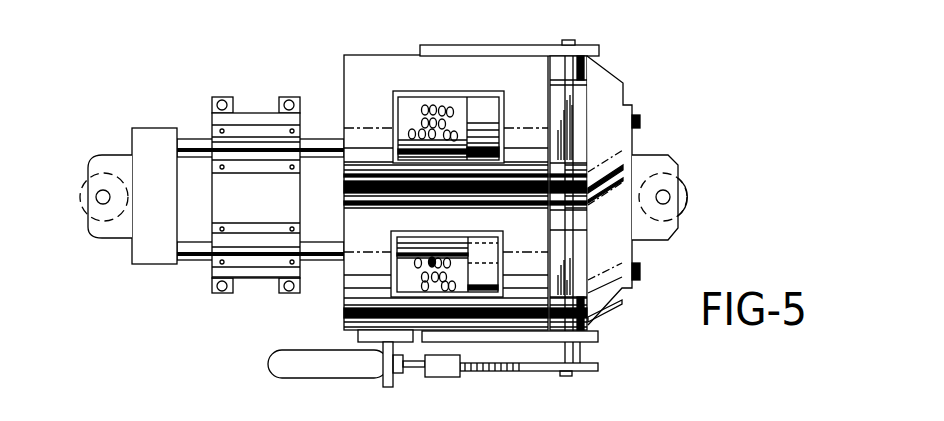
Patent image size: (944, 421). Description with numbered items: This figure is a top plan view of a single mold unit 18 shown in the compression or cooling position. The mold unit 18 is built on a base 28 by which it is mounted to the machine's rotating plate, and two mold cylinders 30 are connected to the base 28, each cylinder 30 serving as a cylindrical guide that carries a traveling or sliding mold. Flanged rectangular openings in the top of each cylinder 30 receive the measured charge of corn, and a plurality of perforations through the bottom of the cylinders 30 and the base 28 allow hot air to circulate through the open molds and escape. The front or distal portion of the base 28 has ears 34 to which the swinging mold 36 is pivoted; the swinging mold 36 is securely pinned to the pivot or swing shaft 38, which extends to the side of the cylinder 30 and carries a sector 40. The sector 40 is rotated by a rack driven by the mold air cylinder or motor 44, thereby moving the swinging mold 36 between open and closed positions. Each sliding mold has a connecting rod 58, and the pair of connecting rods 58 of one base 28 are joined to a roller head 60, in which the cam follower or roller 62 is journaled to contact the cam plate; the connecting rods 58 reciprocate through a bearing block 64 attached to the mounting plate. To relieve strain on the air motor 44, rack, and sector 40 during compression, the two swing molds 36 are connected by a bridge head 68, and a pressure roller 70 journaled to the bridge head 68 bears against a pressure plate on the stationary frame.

The mold unit 18 is at (326, 290).
The base 28 is at (514, 45).
The mold cylinder 30 is at (380, 95).
The ears 34 is at (597, 45).
The swinging mold 36 is at (612, 80).
The pivot shaft or swing shaft 38 is at (579, 18).
The sector 40 is at (598, 367).
The mold air cylinder or motor 44 is at (352, 374).
The connecting rod 58 is at (197, 256).
The roller head 60 is at (153, 139).
The cam follower or roller 62 is at (82, 193).
The bearing block 64 is at (260, 210).
The bridge head 68 is at (647, 160).
The pressure roller 70 is at (688, 194).